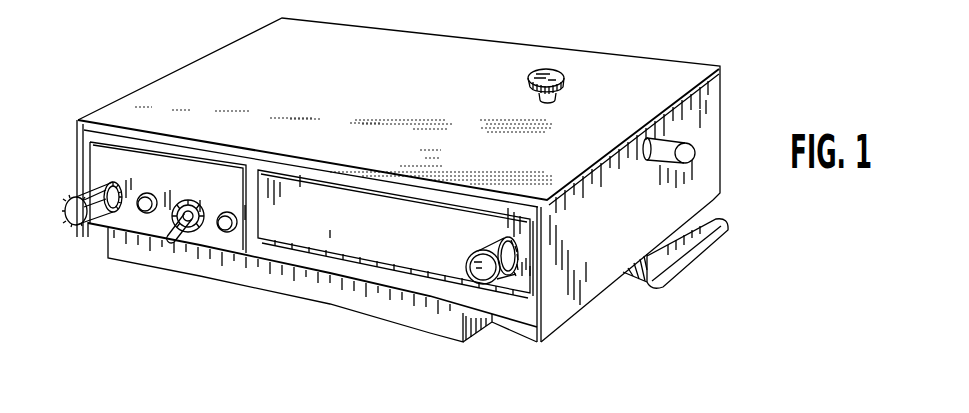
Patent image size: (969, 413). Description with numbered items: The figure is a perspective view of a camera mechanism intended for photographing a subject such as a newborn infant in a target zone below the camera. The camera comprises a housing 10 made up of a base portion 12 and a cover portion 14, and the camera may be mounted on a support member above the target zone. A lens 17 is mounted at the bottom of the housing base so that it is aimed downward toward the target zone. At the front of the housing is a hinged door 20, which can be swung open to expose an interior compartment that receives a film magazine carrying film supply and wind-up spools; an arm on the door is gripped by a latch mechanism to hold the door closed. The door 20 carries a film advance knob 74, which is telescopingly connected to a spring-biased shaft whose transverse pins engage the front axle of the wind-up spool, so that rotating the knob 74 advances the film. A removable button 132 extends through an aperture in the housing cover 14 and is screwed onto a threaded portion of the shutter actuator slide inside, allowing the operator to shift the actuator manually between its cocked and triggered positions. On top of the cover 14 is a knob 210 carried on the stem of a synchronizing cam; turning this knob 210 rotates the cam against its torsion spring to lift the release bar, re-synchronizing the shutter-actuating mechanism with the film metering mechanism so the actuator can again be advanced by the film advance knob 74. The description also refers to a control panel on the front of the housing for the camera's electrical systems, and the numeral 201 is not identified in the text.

The housing 10 is at (618, 49).
The base portion 12 is at (505, 325).
The cover portion 14 is at (701, 97).
The lens 17 is at (391, 328).
The hinged door 20 is at (356, 242).
The film advance knob 74 is at (476, 259).
The removable button 132 is at (696, 154).
The toggle switch 201 is at (165, 219).
The knob 210 is at (565, 79).